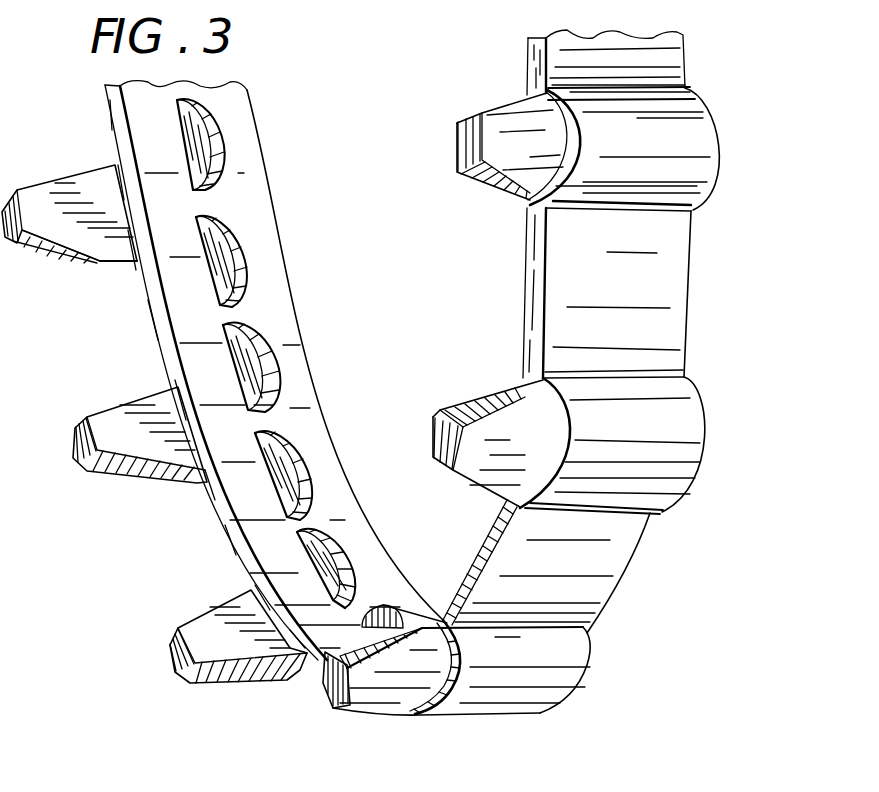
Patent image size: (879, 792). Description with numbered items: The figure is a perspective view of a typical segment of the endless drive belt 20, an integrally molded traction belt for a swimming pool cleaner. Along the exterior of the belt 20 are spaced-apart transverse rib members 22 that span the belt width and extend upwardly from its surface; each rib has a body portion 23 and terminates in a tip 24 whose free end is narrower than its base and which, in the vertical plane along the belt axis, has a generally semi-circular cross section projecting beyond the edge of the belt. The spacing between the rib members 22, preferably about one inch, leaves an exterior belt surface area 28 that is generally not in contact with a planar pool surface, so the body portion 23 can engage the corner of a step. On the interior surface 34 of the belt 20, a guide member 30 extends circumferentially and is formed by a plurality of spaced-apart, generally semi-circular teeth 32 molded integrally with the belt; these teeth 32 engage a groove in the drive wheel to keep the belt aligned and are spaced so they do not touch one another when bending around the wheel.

The endless drive belt 20 is at (212, 512).
The transverse rib member 22 is at (727, 132).
The body portion 23 is at (693, 188).
The tip 24 is at (47, 250).
The exterior belt surface area 28 is at (677, 294).
The guide member 30 is at (233, 142).
The teeth 32 is at (267, 340).
The interior surface 34 is at (260, 213).